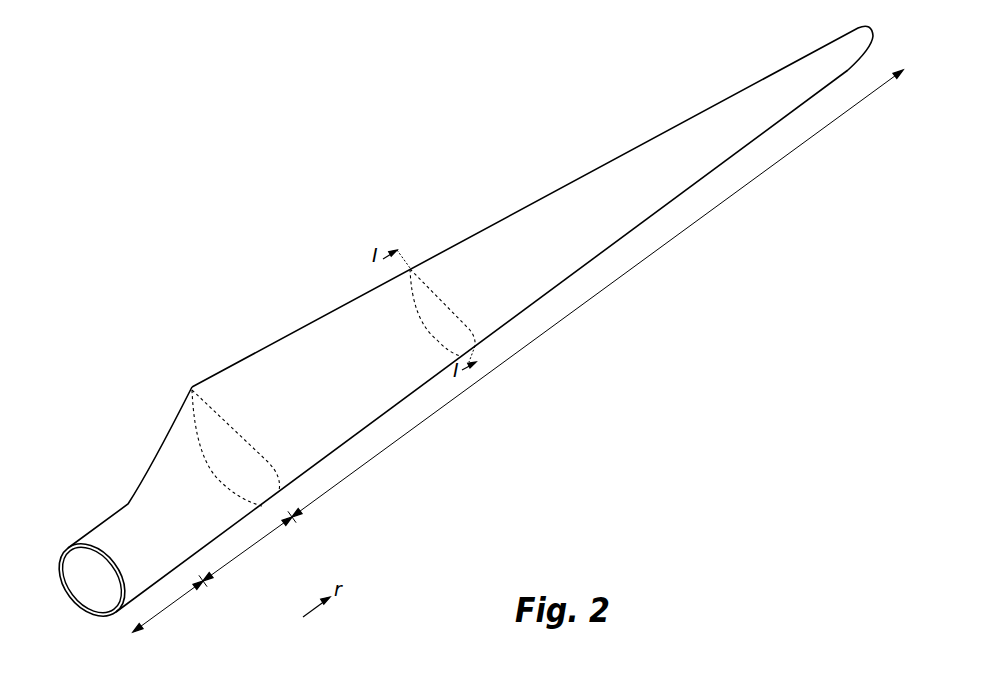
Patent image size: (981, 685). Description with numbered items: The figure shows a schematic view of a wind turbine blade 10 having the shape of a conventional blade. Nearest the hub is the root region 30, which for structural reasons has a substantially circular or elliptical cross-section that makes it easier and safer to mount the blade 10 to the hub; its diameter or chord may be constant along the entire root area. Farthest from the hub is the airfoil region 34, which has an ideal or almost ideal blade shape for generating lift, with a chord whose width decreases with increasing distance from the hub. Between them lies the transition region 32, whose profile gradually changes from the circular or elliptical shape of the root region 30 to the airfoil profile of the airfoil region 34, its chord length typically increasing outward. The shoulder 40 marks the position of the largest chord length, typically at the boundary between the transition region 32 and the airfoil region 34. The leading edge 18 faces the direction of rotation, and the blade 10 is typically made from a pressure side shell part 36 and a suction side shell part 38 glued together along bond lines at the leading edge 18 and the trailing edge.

The wind turbine blade 10 is at (323, 212).
The leading edge 18 is at (625, 233).
The root region 30 is at (177, 608).
The transition region 32 is at (253, 548).
The airfoil region 34 is at (537, 337).
The pressure side shell part 36 is at (87, 545).
The suction side shell part 38 is at (63, 552).
The shoulder 40 is at (192, 386).